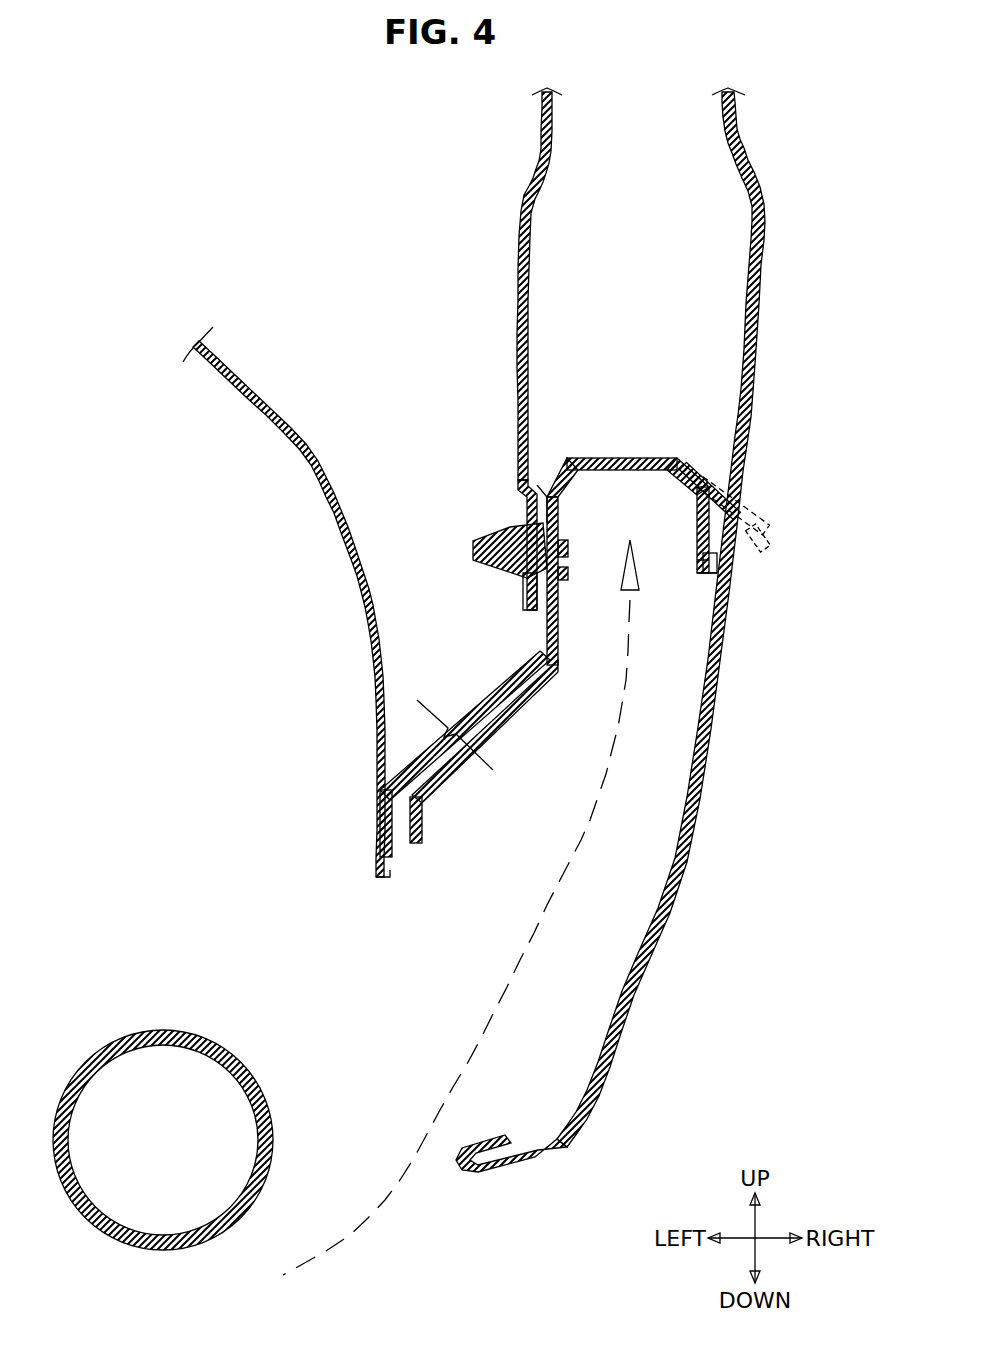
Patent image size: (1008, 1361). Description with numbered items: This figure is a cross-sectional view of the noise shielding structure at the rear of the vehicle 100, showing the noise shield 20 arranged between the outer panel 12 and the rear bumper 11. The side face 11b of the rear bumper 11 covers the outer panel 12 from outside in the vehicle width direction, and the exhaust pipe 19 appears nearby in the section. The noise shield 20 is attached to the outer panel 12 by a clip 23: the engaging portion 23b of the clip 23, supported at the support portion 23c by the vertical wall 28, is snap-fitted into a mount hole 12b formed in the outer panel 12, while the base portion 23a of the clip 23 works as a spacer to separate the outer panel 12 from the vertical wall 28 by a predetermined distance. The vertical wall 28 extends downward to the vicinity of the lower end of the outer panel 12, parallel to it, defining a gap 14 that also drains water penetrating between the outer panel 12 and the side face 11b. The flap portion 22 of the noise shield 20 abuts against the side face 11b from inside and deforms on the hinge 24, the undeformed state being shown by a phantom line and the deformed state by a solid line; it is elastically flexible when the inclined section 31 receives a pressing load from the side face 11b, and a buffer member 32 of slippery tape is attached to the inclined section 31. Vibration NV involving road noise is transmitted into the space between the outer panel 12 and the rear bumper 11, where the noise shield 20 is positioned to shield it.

The rear bumper 11 is at (664, 630).
The side face of the rear bumper 11b is at (511, 1153).
The outer panel 12 is at (530, 262).
The mount hole 12b is at (532, 575).
The gap 14 is at (447, 745).
The exhaust pipe 19 is at (210, 1040).
The noise shield 20 is at (706, 512).
The flap portion 22 is at (708, 492).
The clip 23 is at (516, 489).
The base portion 23a is at (548, 500).
The engaging portion 23b is at (470, 546).
The support portion 23c is at (566, 545).
The hinge 24 is at (693, 453).
The vertical wall 28 is at (560, 640).
The inclined section 31 is at (758, 558).
The buffer member 32 is at (772, 530).
The vehicle 100 is at (300, 512).
The vibration NV is at (578, 855).